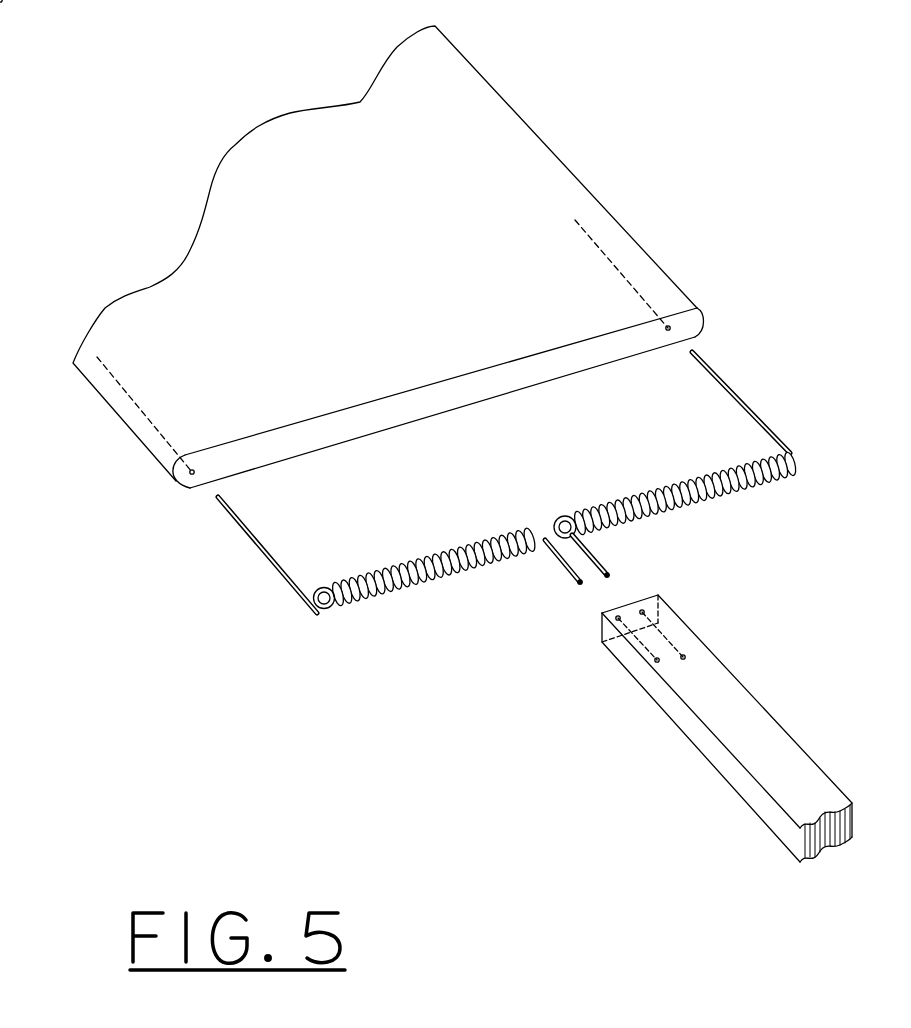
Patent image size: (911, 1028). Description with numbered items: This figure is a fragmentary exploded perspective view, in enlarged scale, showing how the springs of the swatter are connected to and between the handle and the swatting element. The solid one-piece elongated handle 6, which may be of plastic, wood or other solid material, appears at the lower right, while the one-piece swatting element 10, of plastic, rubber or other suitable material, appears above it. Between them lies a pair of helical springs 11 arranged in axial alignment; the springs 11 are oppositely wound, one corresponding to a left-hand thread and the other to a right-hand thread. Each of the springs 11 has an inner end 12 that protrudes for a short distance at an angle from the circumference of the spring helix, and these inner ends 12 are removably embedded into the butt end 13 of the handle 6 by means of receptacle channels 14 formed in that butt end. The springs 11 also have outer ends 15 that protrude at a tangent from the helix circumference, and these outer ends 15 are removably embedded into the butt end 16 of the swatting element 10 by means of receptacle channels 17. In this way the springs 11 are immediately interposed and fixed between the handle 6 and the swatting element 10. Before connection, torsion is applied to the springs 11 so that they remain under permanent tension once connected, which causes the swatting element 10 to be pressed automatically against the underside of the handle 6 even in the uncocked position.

The handle 6 is at (720, 775).
The swatting element 10 is at (542, 140).
The helical springs 11 is at (647, 493).
The inner ends 12 is at (572, 545).
The butt end 13 is at (625, 603).
The receptacle channels 14 is at (640, 604).
The outer ends 15 is at (720, 377).
The butt end 16 is at (423, 403).
The receptacle channels 17 is at (670, 328).